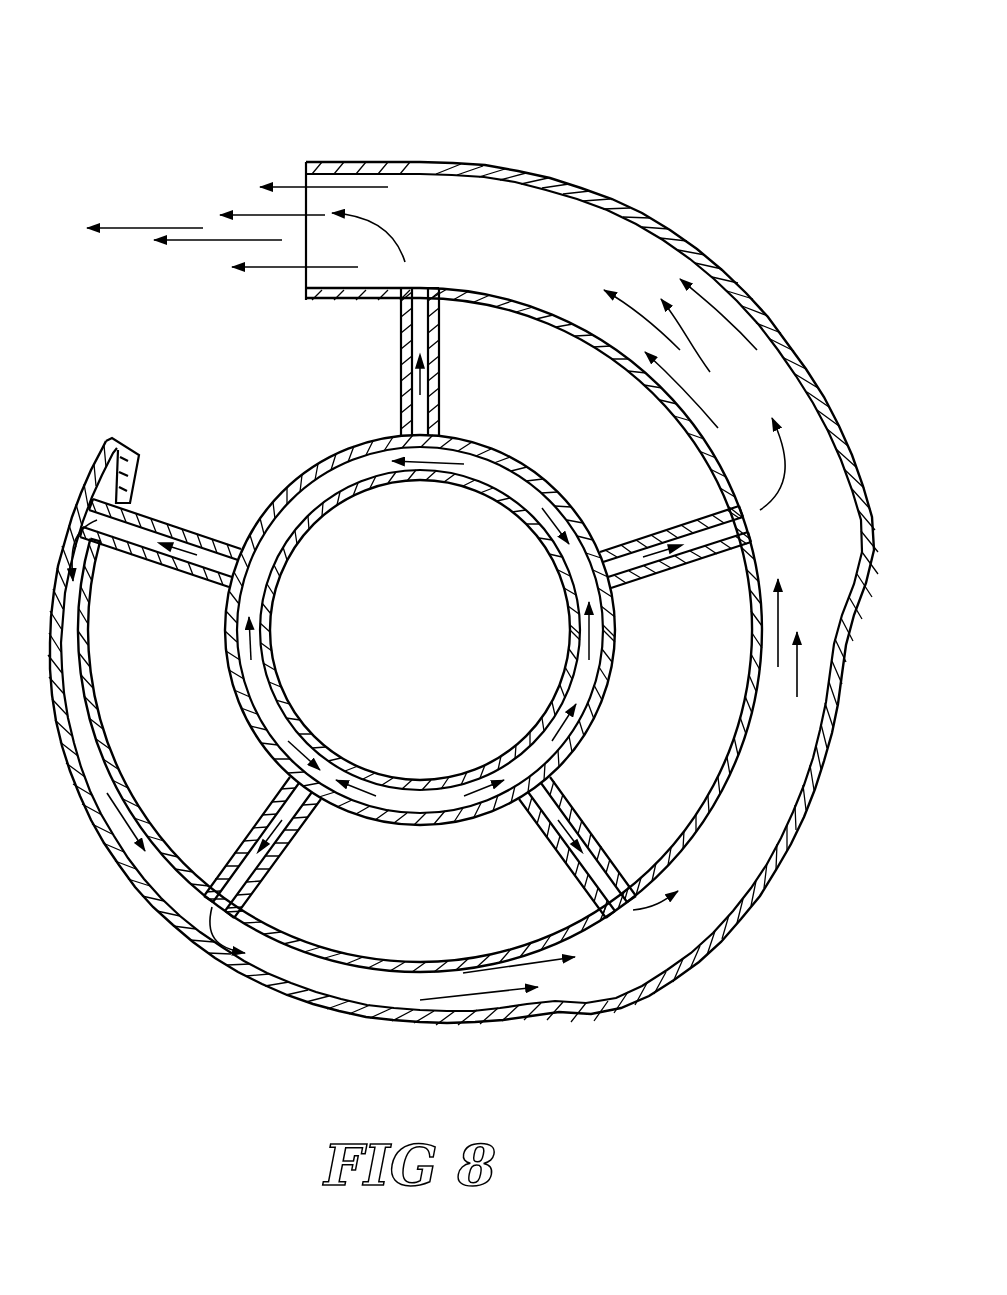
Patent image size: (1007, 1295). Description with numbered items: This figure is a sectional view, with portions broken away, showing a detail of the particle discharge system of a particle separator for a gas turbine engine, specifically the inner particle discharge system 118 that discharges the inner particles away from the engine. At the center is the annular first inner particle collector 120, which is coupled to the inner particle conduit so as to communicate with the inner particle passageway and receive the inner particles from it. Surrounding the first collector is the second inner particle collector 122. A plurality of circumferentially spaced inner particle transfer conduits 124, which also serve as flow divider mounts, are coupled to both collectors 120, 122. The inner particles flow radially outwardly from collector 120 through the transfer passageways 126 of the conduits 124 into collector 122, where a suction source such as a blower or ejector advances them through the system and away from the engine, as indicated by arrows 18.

The inner particle discharge system 118 is at (324, 120).
The arrows 18 is at (137, 227).
The second inner particle collector 122 is at (583, 194).
The annular first inner particle collector 120 is at (508, 447).
The inner particle transfer conduits 124 is at (441, 364).
The transfer passageways 126 is at (406, 360).